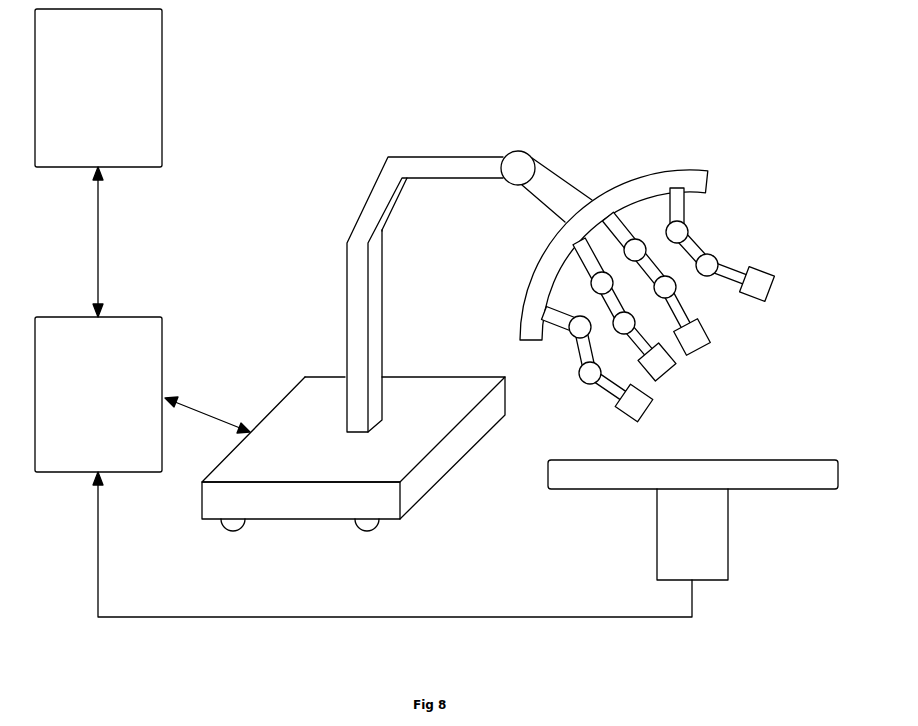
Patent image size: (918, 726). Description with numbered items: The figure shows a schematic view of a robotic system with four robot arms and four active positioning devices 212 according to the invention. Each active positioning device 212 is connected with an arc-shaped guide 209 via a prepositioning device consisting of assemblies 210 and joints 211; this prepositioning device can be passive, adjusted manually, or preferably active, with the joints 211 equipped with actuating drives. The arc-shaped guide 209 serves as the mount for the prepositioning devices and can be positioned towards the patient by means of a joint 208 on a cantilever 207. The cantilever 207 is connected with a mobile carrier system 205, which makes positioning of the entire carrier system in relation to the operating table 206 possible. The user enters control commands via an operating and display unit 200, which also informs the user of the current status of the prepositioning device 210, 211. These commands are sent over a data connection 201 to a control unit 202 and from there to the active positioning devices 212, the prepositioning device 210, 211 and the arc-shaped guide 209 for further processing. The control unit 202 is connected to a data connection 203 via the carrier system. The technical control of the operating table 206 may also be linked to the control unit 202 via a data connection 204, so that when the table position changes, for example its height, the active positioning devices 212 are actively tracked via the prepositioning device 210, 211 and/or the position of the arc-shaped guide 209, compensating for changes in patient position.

The operating and display unit 200 is at (161, 48).
The data connection 201 is at (100, 221).
The control unit 202 is at (163, 336).
The data connection 203 is at (210, 408).
The data connection 204 is at (100, 535).
The mobile carrier system 205 is at (440, 470).
The operating table 206 is at (730, 530).
The cantilever 207 is at (412, 162).
The joint 208 is at (522, 152).
The arc-shaped guide 209 is at (637, 178).
The prepositioning device assembly 210 is at (725, 272).
The joints 211 is at (680, 246).
The active positioning devices 212 is at (658, 305).